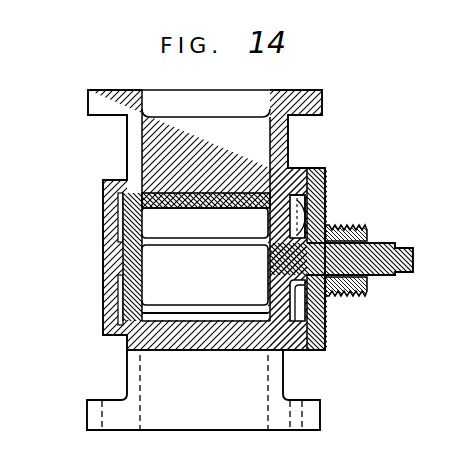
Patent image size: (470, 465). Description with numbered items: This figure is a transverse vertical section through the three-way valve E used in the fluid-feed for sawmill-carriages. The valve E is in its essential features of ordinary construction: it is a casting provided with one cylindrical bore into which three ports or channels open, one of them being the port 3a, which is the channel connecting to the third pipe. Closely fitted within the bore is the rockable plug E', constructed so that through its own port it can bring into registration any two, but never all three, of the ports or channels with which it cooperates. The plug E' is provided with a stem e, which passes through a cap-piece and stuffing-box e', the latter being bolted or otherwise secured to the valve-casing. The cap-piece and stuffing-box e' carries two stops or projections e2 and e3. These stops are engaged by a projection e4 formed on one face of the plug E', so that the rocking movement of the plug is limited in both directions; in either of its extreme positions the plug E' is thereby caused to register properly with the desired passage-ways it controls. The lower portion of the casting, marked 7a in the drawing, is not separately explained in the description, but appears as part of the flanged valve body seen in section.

The three-way valve E is at (199, 260).
The port or channel 3a is at (206, 122).
The rockable plug E' is at (206, 185).
The projection e4 is at (292, 212).
The cap-piece and stuffing-box e' is at (344, 253).
The stop or projection e2 is at (327, 203).
The stem e is at (341, 248).
The stop or projection e3 is at (300, 309).
The lower flange web 7a is at (203, 390).